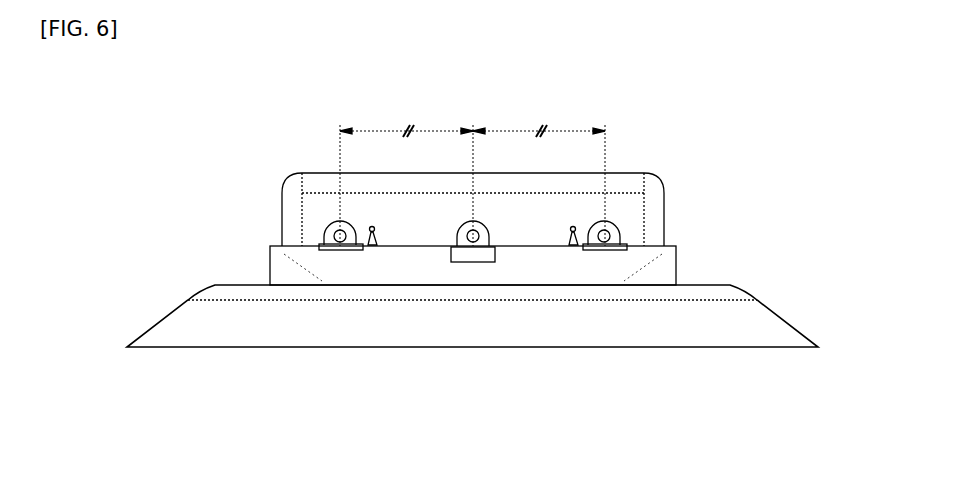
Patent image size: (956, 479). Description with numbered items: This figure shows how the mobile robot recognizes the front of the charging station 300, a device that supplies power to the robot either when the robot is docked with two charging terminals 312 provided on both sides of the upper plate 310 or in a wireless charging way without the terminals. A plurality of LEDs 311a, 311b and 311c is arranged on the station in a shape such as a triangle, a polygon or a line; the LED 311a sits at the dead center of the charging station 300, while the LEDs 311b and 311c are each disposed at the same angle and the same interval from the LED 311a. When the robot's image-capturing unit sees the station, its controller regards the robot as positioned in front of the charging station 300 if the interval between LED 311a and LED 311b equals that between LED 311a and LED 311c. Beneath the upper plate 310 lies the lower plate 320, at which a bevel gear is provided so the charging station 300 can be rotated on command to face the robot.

The charging station 300 is at (307, 107).
The upper plate 310 is at (712, 284).
The LED 311a is at (473, 262).
The LED 311b is at (340, 250).
The LED 311c is at (604, 250).
The charging terminal 312 is at (372, 228).
The lower plate 320 is at (790, 318).